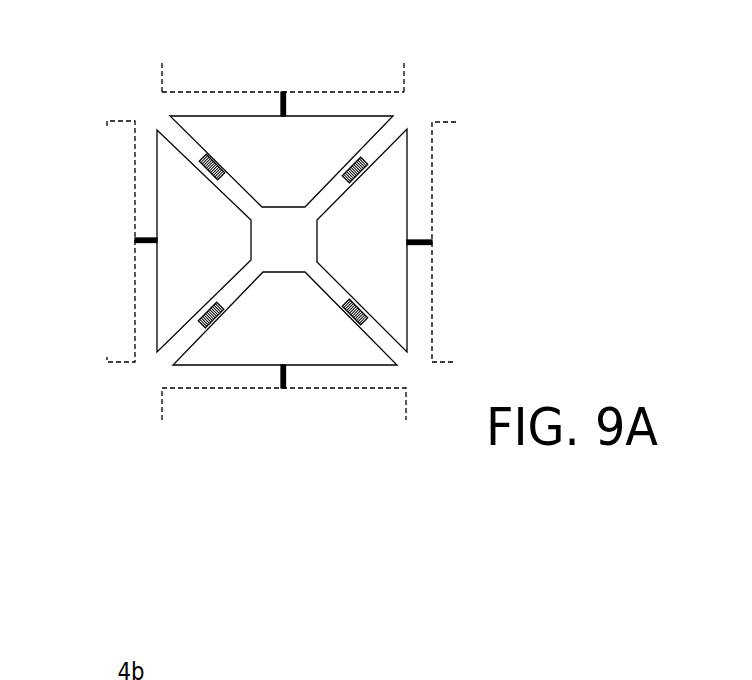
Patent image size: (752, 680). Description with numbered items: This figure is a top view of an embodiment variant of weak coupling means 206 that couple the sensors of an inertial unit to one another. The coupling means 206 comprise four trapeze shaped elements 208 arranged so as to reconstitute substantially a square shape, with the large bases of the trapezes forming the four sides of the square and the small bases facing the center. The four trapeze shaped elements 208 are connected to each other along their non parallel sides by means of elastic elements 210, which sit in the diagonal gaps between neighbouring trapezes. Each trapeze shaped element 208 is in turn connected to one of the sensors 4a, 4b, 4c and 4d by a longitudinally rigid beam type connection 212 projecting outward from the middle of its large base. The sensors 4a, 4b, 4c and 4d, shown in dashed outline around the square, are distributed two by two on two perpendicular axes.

The coupling means 206 is at (297, 237).
The trapeze shaped element 208 is at (368, 122).
The elastic element 210 is at (214, 160).
The longitudinally rigid beam type connection 212 is at (285, 100).
The sensor 4a is at (97, 356).
The sensor 4b is at (165, 57).
The sensor 4c is at (468, 122).
The sensor 4d is at (401, 428).